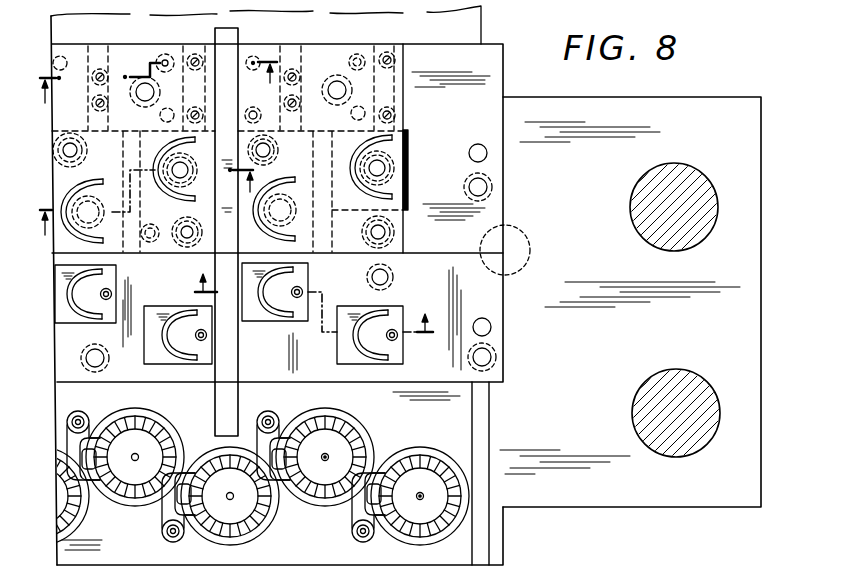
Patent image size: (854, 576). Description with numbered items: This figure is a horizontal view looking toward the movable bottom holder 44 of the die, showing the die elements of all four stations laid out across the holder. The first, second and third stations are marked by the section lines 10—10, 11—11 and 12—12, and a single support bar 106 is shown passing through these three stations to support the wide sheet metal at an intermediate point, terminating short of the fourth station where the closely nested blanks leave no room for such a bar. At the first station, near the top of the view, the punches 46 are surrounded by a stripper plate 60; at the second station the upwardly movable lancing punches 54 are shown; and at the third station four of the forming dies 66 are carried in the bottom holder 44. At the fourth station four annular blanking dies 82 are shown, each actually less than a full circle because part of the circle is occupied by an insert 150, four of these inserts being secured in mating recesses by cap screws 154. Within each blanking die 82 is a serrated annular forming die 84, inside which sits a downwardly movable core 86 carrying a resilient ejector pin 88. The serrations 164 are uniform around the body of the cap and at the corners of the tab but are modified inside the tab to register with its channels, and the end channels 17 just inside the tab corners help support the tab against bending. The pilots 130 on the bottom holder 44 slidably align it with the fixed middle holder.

The section line 10— 10 is at (157, 94).
The section line 11— 11 is at (151, 215).
The section line 12— 12 is at (316, 294).
The end channels 17 is at (324, 456).
The movable bottom holder 44 is at (753, 358).
The punches 46 is at (100, 68).
The upwardly movable lancing punches 54 is at (82, 182).
The stripper plate 60 is at (128, 58).
The forming dies 66 is at (229, 313).
The blanking die 82 is at (132, 410).
The serrated annular forming die 84 is at (152, 422).
The core 86 is at (125, 472).
The resilient ejector pin 88 is at (230, 496).
The support bar 106 is at (238, 40).
The pilots 130 is at (717, 200).
The die insert 150 is at (108, 425).
The cap screws 154 is at (77, 410).
The serrations 164 is at (170, 427).